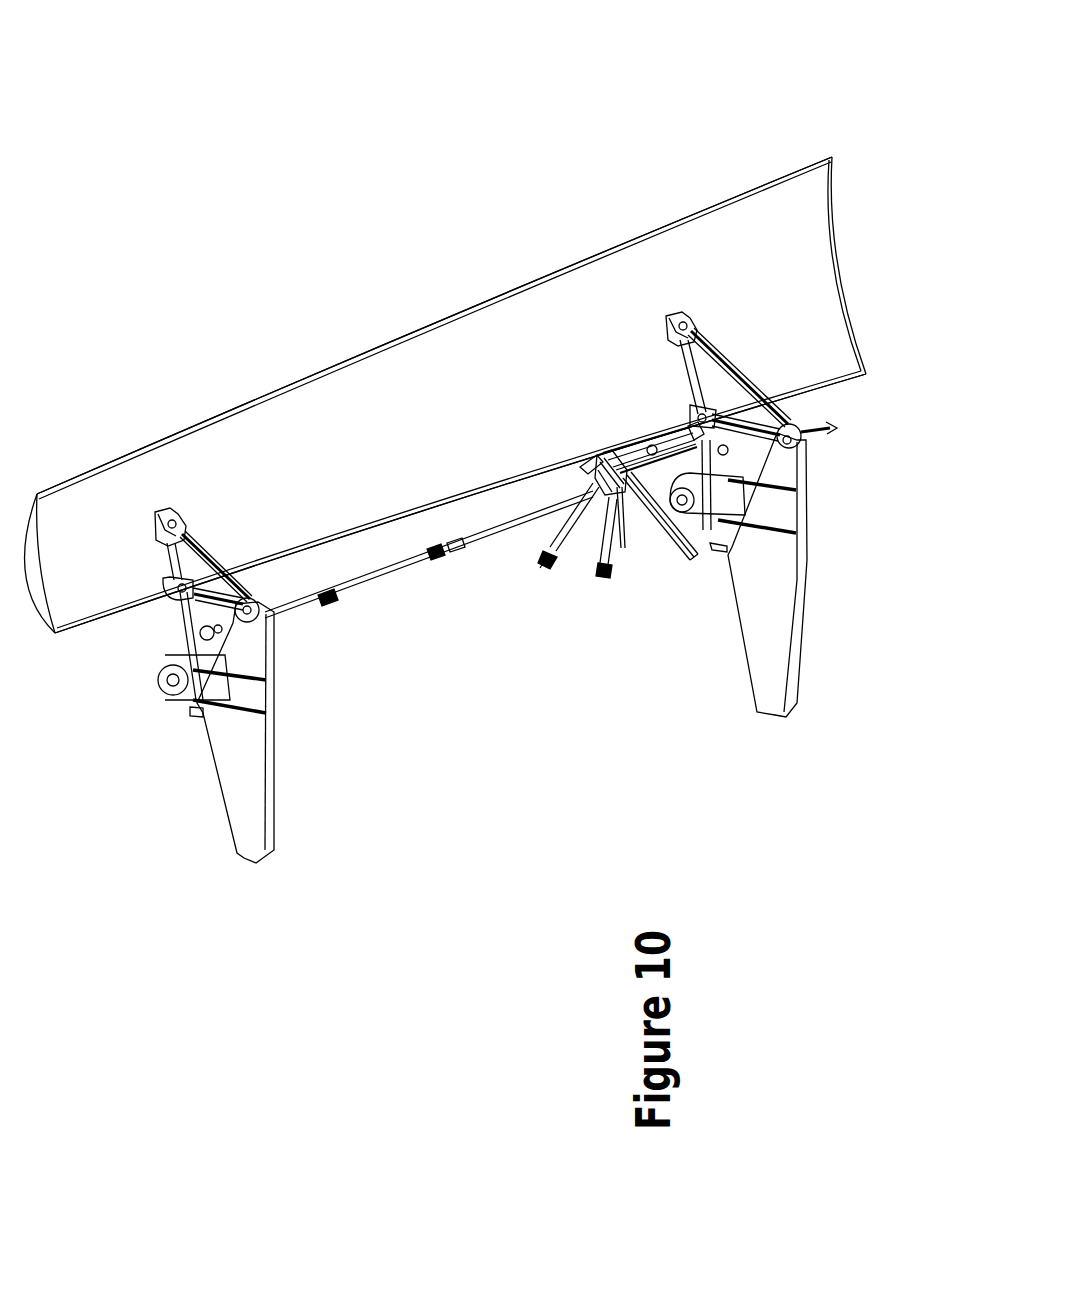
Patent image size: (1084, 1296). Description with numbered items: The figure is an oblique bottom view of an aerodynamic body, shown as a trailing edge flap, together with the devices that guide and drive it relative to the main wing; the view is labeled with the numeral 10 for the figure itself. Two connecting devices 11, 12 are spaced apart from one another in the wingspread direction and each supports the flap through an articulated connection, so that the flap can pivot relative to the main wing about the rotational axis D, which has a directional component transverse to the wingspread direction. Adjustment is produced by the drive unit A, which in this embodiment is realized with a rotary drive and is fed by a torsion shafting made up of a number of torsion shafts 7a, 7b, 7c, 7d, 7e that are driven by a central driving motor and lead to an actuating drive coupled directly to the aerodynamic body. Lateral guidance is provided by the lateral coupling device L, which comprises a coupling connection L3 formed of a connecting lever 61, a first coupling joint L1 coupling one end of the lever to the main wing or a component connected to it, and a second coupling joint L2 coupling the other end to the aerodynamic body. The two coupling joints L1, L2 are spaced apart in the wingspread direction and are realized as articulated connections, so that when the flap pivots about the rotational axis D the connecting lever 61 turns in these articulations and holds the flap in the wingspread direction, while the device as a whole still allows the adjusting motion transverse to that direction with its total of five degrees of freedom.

The panel 10 is at (100, 497).
The connecting device 11 is at (740, 250).
The connecting device 12 is at (183, 464).
The rotational axis D is at (219, 530).
The torsion shaft 7a is at (822, 435).
The torsion shaft 7b is at (670, 477).
The torsion shaft 7c is at (495, 537).
The torsion shaft 7d is at (373, 580).
The torsion shaft 7e is at (290, 617).
The connecting lever 61 is at (652, 447).
The lateral coupling device L is at (572, 405).
The first coupling joint L1 is at (585, 460).
The second coupling joint L2 is at (670, 415).
The coupling connection L3 is at (630, 440).
The drive unit A is at (697, 650).